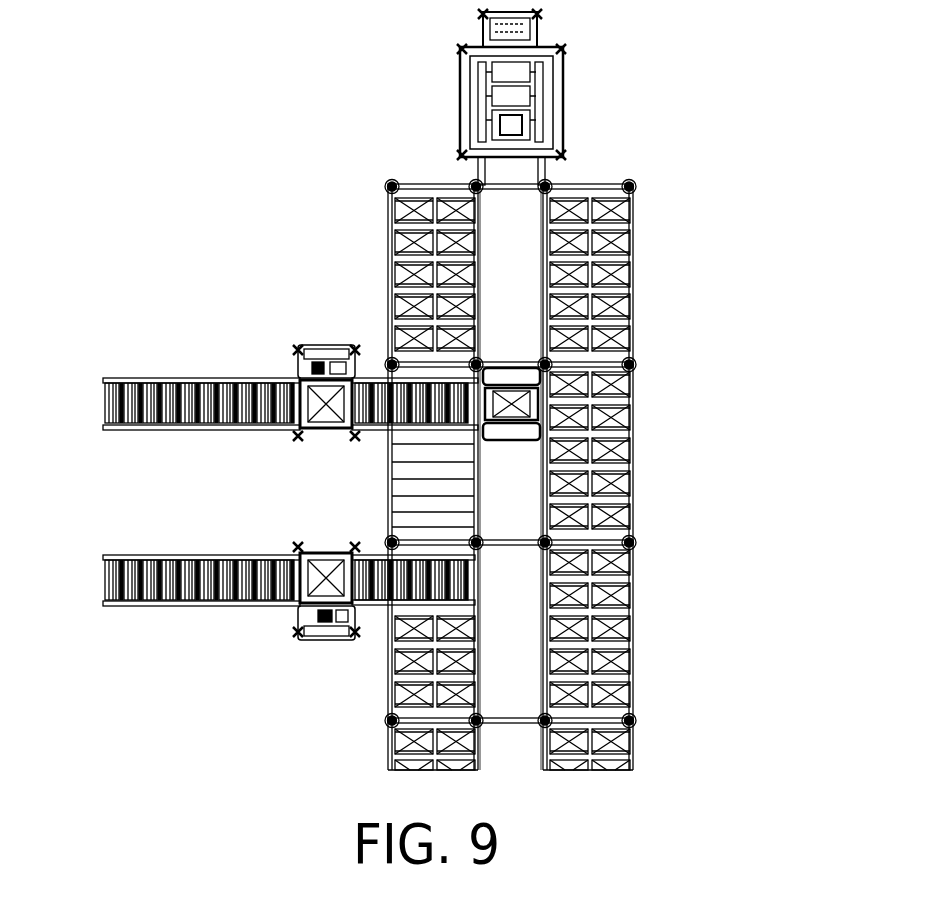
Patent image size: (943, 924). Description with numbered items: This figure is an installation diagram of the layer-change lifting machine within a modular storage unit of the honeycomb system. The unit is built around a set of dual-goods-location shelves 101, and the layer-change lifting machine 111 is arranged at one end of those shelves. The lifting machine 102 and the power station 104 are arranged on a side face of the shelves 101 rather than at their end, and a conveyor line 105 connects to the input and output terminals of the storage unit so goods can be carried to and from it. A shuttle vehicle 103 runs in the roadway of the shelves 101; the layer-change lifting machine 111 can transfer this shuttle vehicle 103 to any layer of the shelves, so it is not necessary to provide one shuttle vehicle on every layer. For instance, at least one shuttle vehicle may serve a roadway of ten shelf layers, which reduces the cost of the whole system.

The dual-goods-location shelves 101 is at (436, 468).
The lifting machine 102 is at (297, 602).
The shuttle vehicle 103 is at (395, 335).
The power station 104 is at (437, 600).
The conveyor line 105 is at (213, 377).
The layer-change lifting machine 111 is at (478, 90).